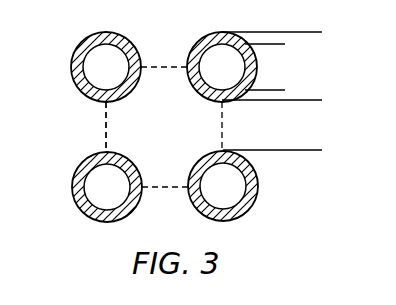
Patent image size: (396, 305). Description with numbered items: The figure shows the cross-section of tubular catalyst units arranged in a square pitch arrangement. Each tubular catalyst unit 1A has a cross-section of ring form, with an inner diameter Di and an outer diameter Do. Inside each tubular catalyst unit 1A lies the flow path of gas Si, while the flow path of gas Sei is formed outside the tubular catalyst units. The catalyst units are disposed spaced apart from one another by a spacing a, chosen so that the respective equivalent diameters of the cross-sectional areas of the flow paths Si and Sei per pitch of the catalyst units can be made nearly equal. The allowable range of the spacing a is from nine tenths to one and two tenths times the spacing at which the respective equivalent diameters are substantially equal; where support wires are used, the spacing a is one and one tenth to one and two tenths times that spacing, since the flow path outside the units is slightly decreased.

The tubular catalyst unit 1A is at (84, 46).
The flow path of gas inside the tubular catalyst unit Si is at (212, 60).
The flow path of gas outside the tubular catalyst unit Sei is at (137, 120).
The inner diameter Di is at (277, 44).
The outer diameter Do is at (316, 32).
The spacing a is at (317, 100).